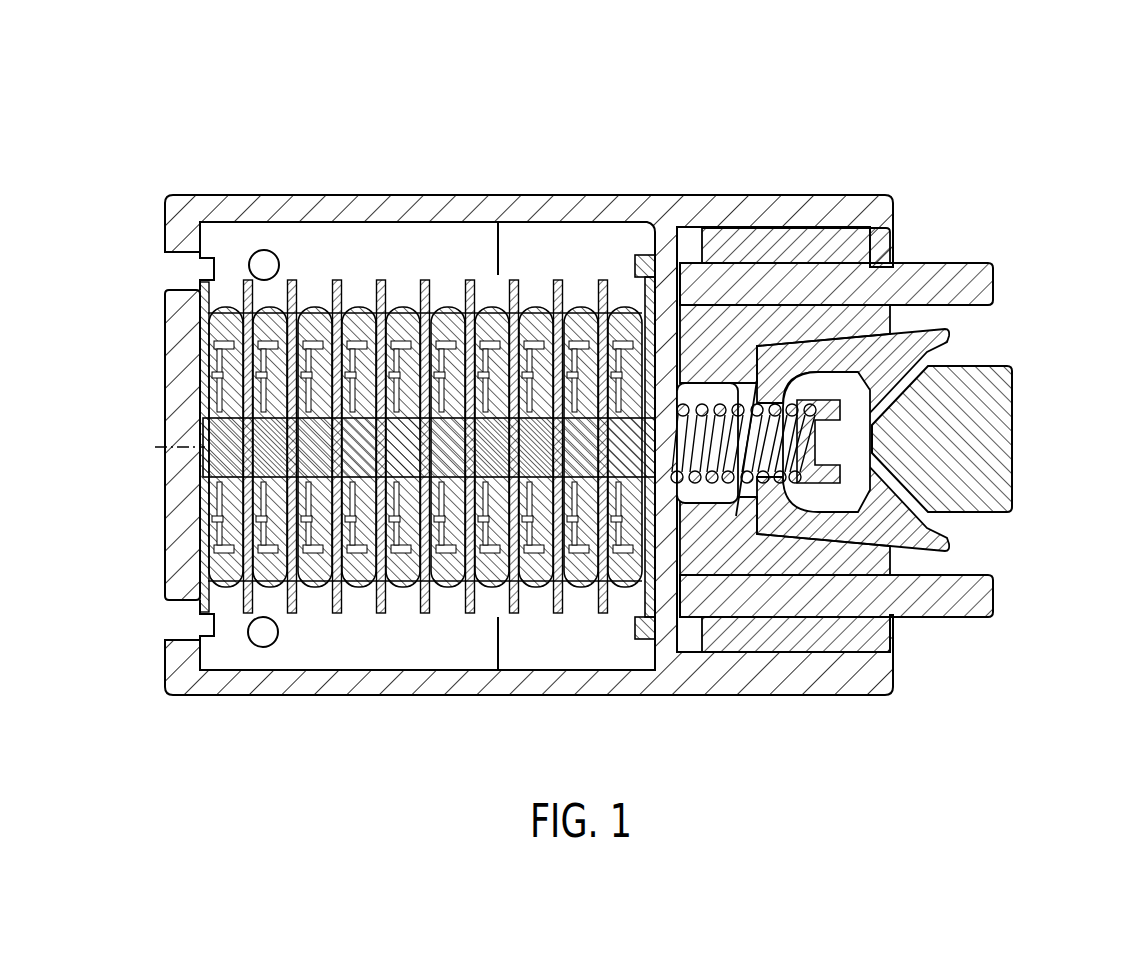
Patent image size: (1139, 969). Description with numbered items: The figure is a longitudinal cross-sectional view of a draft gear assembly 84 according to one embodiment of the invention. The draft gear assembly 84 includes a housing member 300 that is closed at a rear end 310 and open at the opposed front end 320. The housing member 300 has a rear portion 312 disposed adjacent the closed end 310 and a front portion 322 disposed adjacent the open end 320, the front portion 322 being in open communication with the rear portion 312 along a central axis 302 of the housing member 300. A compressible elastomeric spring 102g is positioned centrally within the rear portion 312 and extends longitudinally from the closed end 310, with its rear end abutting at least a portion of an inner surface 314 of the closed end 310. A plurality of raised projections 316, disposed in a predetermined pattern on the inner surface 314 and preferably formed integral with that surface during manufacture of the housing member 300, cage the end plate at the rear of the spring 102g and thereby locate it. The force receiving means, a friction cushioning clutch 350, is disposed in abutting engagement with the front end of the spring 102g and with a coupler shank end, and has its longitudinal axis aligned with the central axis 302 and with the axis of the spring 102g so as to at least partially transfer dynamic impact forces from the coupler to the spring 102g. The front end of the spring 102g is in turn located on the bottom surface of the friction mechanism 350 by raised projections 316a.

The draft gear assembly 84 is at (764, 98).
The housing member 300 is at (470, 186).
The rear end 310 is at (165, 220).
The rear portion 312 is at (372, 245).
The inner surface 314 is at (200, 478).
The raised projections 316 is at (208, 257).
The raised projections 316a is at (645, 256).
The front end 320 is at (909, 226).
The front portion 322 is at (762, 193).
The friction cushioning clutch 350 is at (1038, 288).
The central axis 302 is at (188, 447).
The compressible elastomeric spring 102g is at (419, 645).